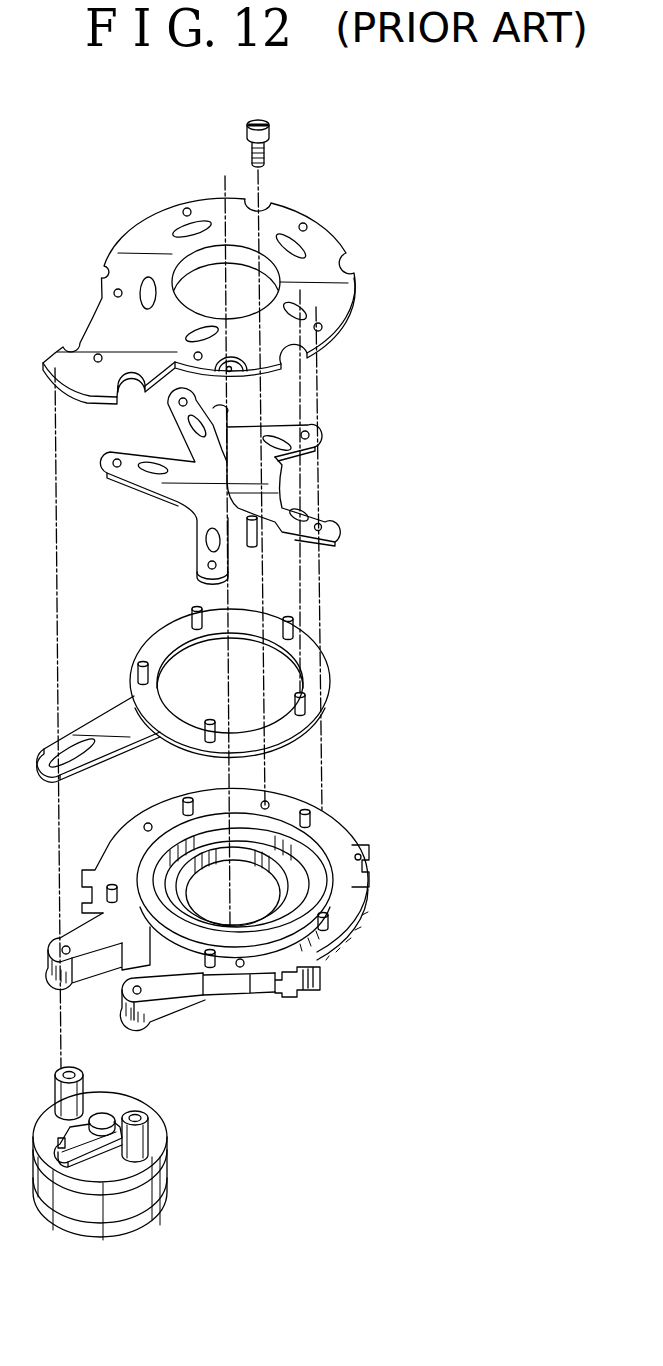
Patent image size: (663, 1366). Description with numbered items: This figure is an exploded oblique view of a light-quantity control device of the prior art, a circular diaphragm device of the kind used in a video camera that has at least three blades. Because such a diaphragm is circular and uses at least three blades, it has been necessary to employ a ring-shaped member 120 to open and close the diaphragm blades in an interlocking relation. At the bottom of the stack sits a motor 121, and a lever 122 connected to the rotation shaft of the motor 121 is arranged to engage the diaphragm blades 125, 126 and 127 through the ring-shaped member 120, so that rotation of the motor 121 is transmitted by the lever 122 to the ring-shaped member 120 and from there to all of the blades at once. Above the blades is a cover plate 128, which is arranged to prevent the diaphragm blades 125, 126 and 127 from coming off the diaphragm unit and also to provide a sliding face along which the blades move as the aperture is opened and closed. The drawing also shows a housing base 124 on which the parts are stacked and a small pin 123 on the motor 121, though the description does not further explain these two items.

The ring-shaped member 120 is at (313, 662).
The motor 121 is at (126, 1203).
The lever 122 is at (82, 1147).
The pin 123 is at (103, 1113).
The housing base 124 is at (333, 958).
The diaphragm blade 125 is at (200, 555).
The diaphragm blade 126 is at (340, 530).
The diaphragm blade 127 is at (317, 434).
The cover plate 128 is at (333, 297).